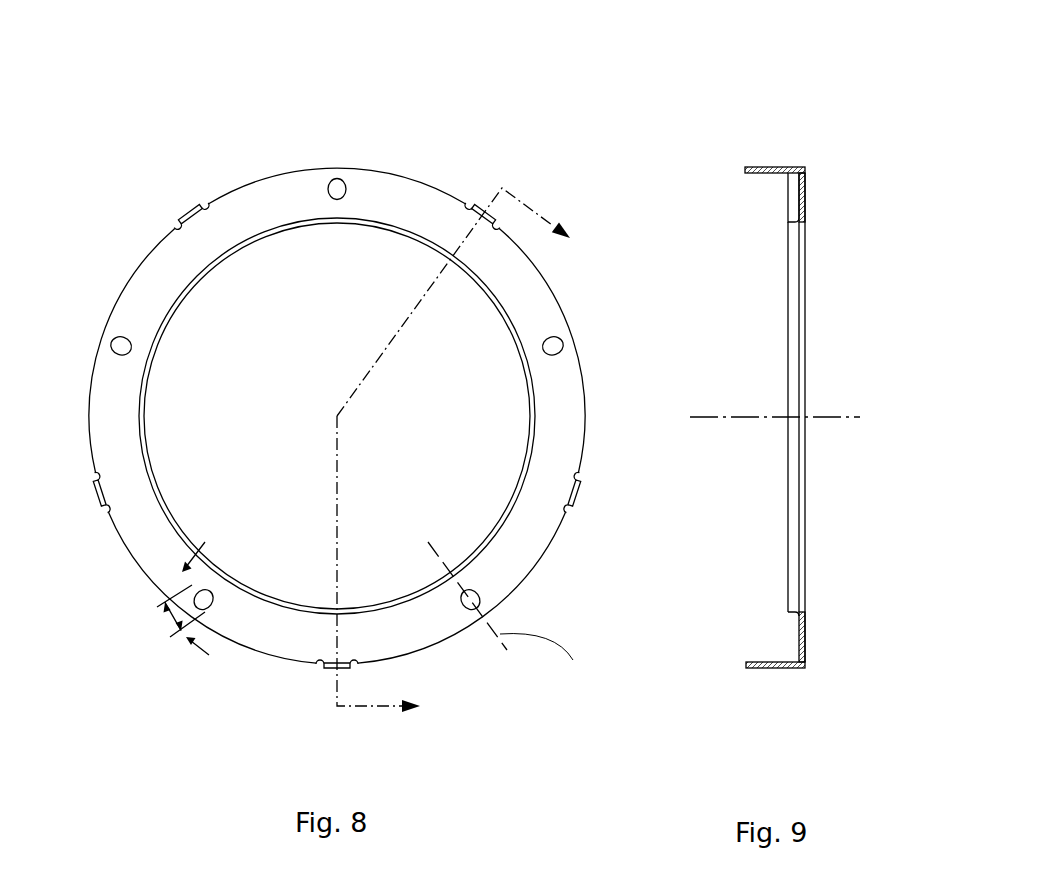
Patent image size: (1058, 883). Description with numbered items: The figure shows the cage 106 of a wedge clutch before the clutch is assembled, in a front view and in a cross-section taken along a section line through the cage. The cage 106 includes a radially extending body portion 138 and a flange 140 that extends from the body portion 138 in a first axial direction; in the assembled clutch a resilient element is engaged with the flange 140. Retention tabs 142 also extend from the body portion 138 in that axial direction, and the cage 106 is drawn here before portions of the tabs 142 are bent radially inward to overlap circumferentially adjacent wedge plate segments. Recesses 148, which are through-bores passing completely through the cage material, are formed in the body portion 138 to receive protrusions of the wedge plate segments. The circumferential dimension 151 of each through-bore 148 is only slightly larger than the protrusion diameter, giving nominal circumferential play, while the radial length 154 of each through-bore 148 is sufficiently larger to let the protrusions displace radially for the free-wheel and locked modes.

In FIG. 8, the cage 106 is at (531, 103).
In FIG. 8, the body portion 138 is at (273, 200).
In FIG. 9, the body portion 138 is at (803, 630).
In FIG. 9, the flange 140 is at (797, 216).
In FIG. 8, the retention tabs 142 is at (191, 211).
In FIG. 9, the retention tabs 142 is at (770, 158).
In FIG. 8, the recesses 148 is at (343, 180).
In FIG. 8, the circumferential dimension 151 is at (209, 655).
In FIG. 8, the length 154 is at (163, 600).